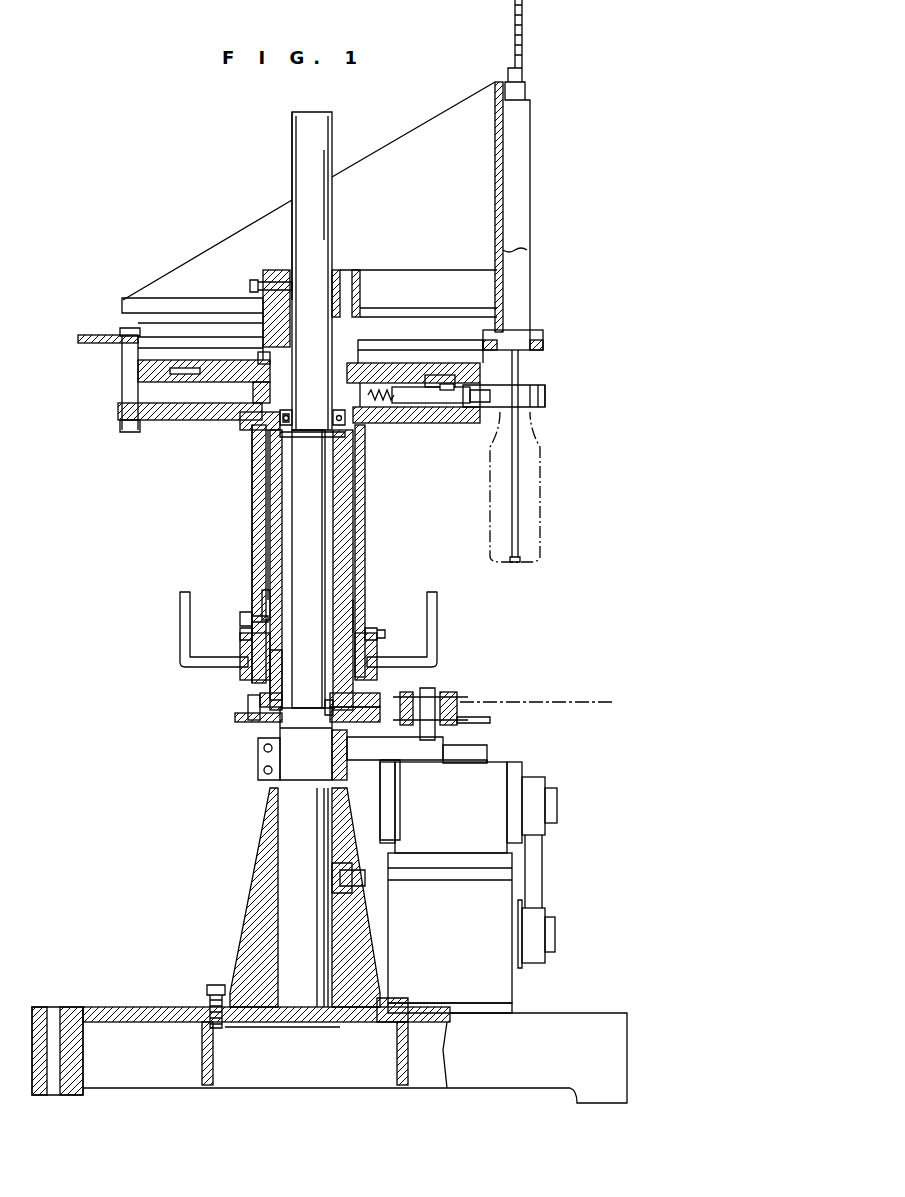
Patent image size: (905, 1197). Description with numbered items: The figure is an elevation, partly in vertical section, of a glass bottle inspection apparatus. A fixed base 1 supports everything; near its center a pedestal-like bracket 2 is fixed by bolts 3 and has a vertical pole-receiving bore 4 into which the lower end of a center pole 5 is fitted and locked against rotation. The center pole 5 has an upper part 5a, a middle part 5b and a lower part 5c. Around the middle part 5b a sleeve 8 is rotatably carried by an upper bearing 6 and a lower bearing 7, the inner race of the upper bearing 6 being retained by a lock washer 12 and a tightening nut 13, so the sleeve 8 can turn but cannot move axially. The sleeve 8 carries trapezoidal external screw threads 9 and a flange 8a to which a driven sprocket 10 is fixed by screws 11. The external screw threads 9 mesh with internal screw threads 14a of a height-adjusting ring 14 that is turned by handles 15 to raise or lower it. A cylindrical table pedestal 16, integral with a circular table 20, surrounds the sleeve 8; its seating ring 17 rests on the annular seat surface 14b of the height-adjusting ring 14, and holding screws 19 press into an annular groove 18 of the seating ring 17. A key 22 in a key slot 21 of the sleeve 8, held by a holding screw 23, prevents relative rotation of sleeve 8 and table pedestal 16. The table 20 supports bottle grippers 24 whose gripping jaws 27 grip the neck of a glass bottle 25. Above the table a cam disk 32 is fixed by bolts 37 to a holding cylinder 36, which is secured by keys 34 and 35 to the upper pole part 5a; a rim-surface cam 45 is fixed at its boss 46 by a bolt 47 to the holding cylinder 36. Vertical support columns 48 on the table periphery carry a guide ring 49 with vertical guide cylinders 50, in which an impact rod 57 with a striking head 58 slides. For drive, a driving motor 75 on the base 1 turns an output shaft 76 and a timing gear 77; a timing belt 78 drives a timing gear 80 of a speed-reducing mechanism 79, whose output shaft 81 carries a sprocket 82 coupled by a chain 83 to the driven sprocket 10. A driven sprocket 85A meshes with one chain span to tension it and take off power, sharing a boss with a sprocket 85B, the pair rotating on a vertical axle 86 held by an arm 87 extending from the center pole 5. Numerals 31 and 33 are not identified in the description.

The fixed base 1 is at (620, 1057).
The pedestal-like bracket 2 is at (248, 896).
The bolts 3 is at (214, 984).
The pole-receiving bore 4 is at (280, 958).
The center pole 5 is at (337, 150).
The upper part of center pole 5a is at (327, 192).
The middle part of center pole 5b is at (320, 518).
The lower part of center pole 5c is at (290, 828).
The upper bearing 6 is at (350, 460).
The lower bearing 7 is at (356, 702).
The sleeve 8 is at (270, 514).
The flange 8a is at (246, 702).
The external screw threads 9 is at (270, 538).
The driven sprocket 10 is at (242, 718).
The screws 11 is at (258, 732).
The lock washer 12 is at (365, 438).
The tightening nut 13 is at (256, 440).
The height-adjusting ring 14 is at (374, 650).
The internal screw threads 14a is at (270, 658).
The annular seat surface 14b is at (365, 626).
The handles 15 is at (430, 630).
The table pedestal 16 is at (242, 491).
The seating ring 17 is at (250, 652).
The annular groove 18 is at (245, 632).
The holding screws 19 is at (380, 634).
The circular table 20 is at (160, 420).
The key slot 21 is at (268, 560).
The key 22 is at (262, 590).
The holding screw 23 is at (251, 620).
The bottle gripper 24 is at (538, 388).
The glass bottle 25 is at (540, 512).
The gripping jaw 27 is at (532, 410).
The spring 31 is at (446, 384).
The cam disk 32 is at (385, 358).
The plate 33 is at (435, 358).
The key 34 is at (292, 175).
The key 35 is at (298, 412).
The holding cylinder 36 is at (338, 285).
The bolts 37 is at (262, 352).
The rim-surface cam 45 is at (495, 95).
The boss 46 is at (360, 290).
The bolt 47 is at (250, 286).
The vertical support column 48 is at (124, 388).
The guide ring 49 is at (82, 336).
The guide cylinder 50 is at (520, 275).
The impact rod 57 is at (520, 478).
The striking head 58 is at (515, 562).
The driving motor 75 is at (490, 1005).
The output shaft 76 is at (555, 935).
The timing gear 77 is at (540, 965).
The timing belt 78 is at (545, 868).
The speed-reducing mechanism 79 is at (500, 775).
The timing gear 80 is at (557, 805).
The output shaft 81 is at (485, 745).
The sprocket 82 is at (490, 720).
The chain 83 is at (395, 749).
The driven sprocket 85A is at (455, 745).
The sprocket 85B is at (458, 700).
The vertical axle 86 is at (430, 694).
The arm 87 is at (345, 758).